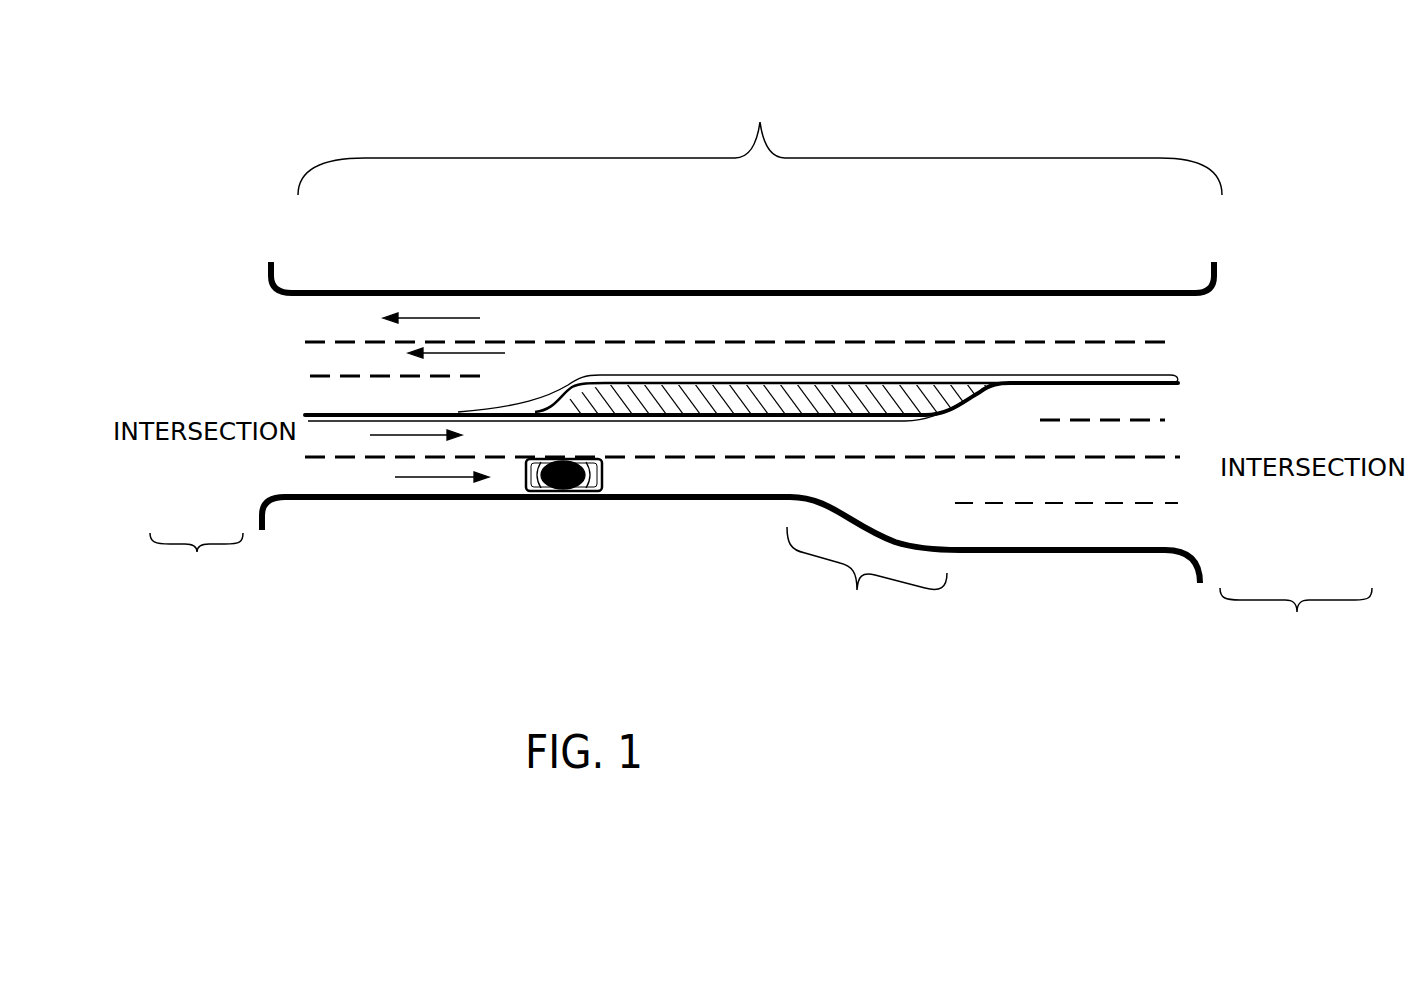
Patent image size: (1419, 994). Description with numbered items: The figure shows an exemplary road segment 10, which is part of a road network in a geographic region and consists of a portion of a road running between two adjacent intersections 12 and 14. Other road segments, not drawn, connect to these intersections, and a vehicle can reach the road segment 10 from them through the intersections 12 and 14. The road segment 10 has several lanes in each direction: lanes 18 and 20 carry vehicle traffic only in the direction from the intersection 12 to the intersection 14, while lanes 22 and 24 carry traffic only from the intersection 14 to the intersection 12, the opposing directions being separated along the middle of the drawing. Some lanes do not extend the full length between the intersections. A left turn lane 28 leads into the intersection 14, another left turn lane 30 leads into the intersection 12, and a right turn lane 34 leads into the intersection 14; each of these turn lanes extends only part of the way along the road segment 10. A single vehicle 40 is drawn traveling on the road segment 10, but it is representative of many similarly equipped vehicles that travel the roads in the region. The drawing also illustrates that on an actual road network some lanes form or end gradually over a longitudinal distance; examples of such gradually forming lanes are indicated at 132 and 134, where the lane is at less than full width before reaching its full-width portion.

The road segment 10 is at (762, 80).
The intersection 12 is at (205, 594).
The intersection 14 is at (1304, 631).
The lane 18 is at (739, 489).
The lane 20 is at (730, 442).
The lane 22 is at (509, 303).
The lane 24 is at (556, 345).
The left turn lane 28 is at (1184, 412).
The left turn lane 30 is at (335, 385).
The right turn lane 34 is at (1052, 544).
The vehicle 40 is at (572, 533).
The gradually forming lane 132 is at (855, 614).
The gradually forming lane 134 is at (978, 400).